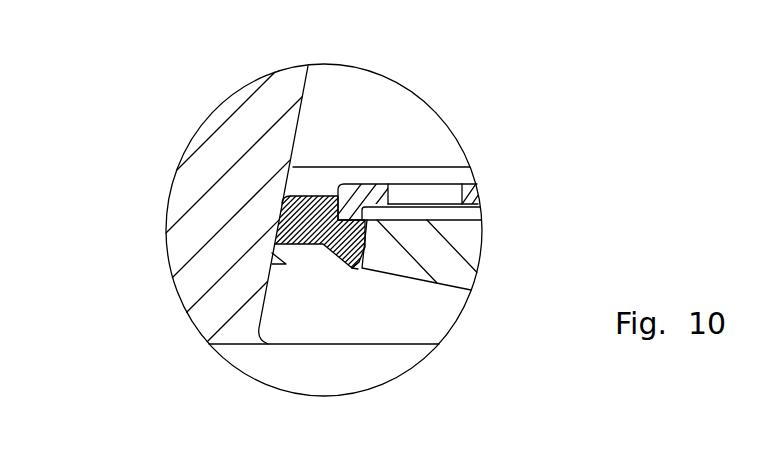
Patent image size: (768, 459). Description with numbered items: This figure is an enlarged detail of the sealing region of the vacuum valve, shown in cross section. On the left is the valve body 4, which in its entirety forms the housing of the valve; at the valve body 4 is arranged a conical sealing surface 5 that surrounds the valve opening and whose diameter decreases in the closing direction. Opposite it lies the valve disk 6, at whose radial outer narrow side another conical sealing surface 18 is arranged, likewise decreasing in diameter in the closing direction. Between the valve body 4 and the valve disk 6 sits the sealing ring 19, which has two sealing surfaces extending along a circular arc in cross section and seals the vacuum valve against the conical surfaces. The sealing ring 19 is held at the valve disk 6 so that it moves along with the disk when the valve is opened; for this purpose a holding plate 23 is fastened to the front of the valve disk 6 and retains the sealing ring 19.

The valve body 4 is at (212, 163).
The sealing surface 5 is at (286, 264).
The valve disk 6 is at (443, 257).
The conical sealing surface 18 is at (360, 268).
The sealing ring 19 is at (305, 213).
The holding plate 23 is at (470, 192).